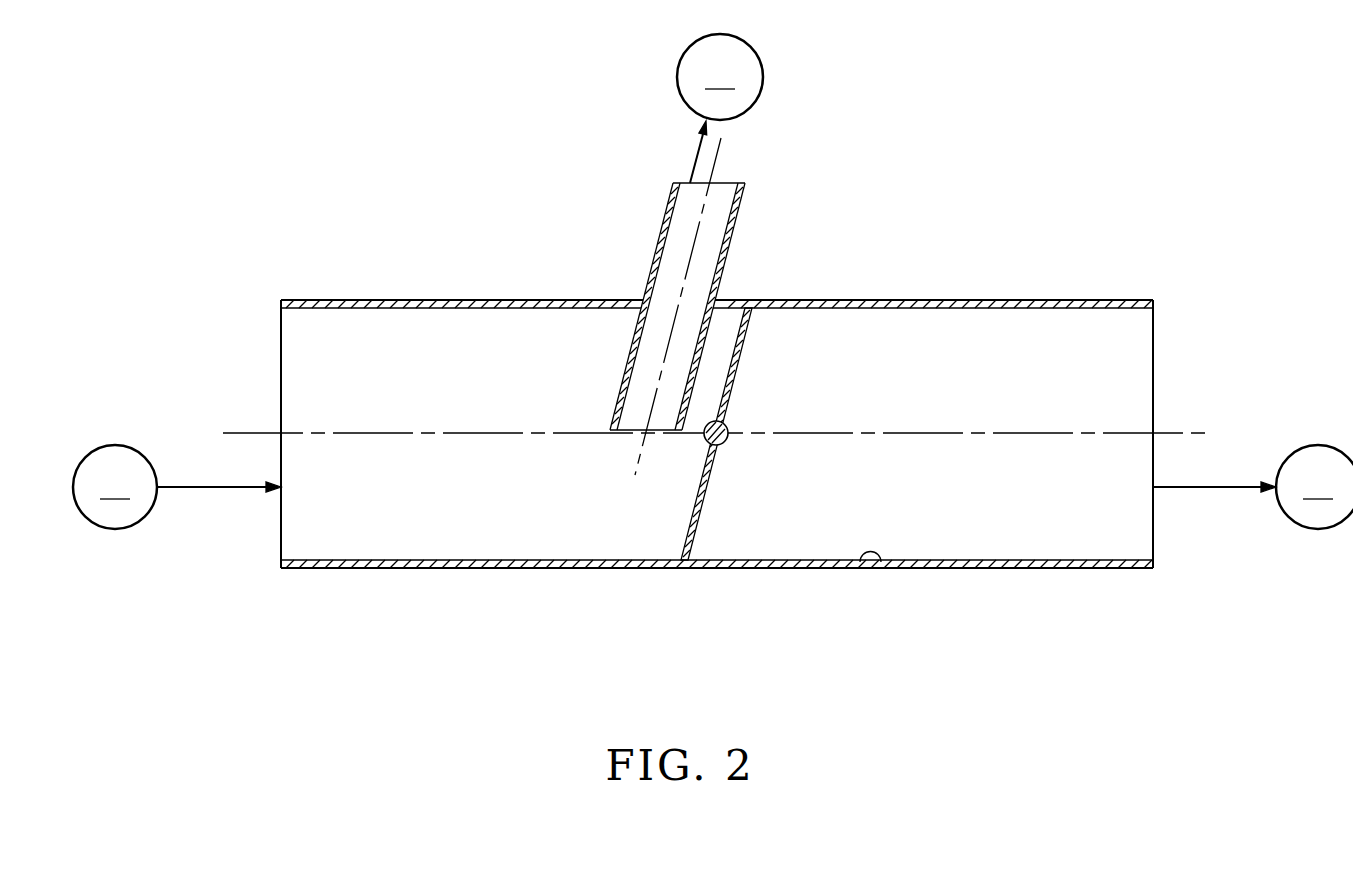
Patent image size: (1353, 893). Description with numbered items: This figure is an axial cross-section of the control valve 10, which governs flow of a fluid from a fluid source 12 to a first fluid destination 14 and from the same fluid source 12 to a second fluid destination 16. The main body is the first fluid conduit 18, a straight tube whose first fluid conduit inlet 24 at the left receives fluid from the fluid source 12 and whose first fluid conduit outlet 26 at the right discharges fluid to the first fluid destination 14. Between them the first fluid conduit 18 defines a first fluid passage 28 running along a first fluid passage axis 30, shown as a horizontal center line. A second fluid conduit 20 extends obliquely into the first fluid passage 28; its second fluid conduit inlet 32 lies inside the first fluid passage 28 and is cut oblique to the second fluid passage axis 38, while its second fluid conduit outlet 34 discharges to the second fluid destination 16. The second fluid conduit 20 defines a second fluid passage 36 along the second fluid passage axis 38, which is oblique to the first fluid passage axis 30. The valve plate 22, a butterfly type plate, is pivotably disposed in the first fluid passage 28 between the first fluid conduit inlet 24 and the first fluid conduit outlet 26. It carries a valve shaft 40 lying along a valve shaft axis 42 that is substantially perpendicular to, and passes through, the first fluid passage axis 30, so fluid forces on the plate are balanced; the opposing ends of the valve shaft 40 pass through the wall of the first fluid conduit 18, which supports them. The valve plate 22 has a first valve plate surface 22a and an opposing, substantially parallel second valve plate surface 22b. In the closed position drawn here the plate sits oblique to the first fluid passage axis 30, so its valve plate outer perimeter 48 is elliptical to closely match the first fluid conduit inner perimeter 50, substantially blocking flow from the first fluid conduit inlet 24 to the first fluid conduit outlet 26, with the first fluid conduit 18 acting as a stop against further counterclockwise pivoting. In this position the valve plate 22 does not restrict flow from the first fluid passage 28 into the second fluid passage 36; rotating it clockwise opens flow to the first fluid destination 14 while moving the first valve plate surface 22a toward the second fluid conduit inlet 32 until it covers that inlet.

The control valve 10 is at (322, 131).
The fluid source 12 is at (177, 487).
The first fluid destination 14 is at (1253, 487).
The second fluid destination 16 is at (720, 108).
The first fluid conduit 18 is at (540, 565).
The second fluid conduit 20 is at (652, 272).
The valve plate 22 is at (699, 517).
The first valve plate surface 22a is at (694, 500).
The second valve plate surface 22b is at (728, 450).
The first fluid conduit inlet 24 is at (281, 372).
The first fluid conduit outlet 26 is at (1153, 376).
The first fluid passage 28 is at (453, 515).
The first fluid passage axis 30 is at (1190, 433).
The second fluid conduit inlet 32 is at (627, 433).
The second fluid conduit outlet 34 is at (731, 183).
The second fluid passage 36 is at (688, 232).
The second fluid passage axis 38 is at (723, 148).
The valve shaft 40 is at (728, 443).
The valve shaft axis 42 is at (728, 430).
The valve plate outer perimeter 48 is at (683, 562).
The first fluid conduit inner perimeter 50 is at (880, 562).